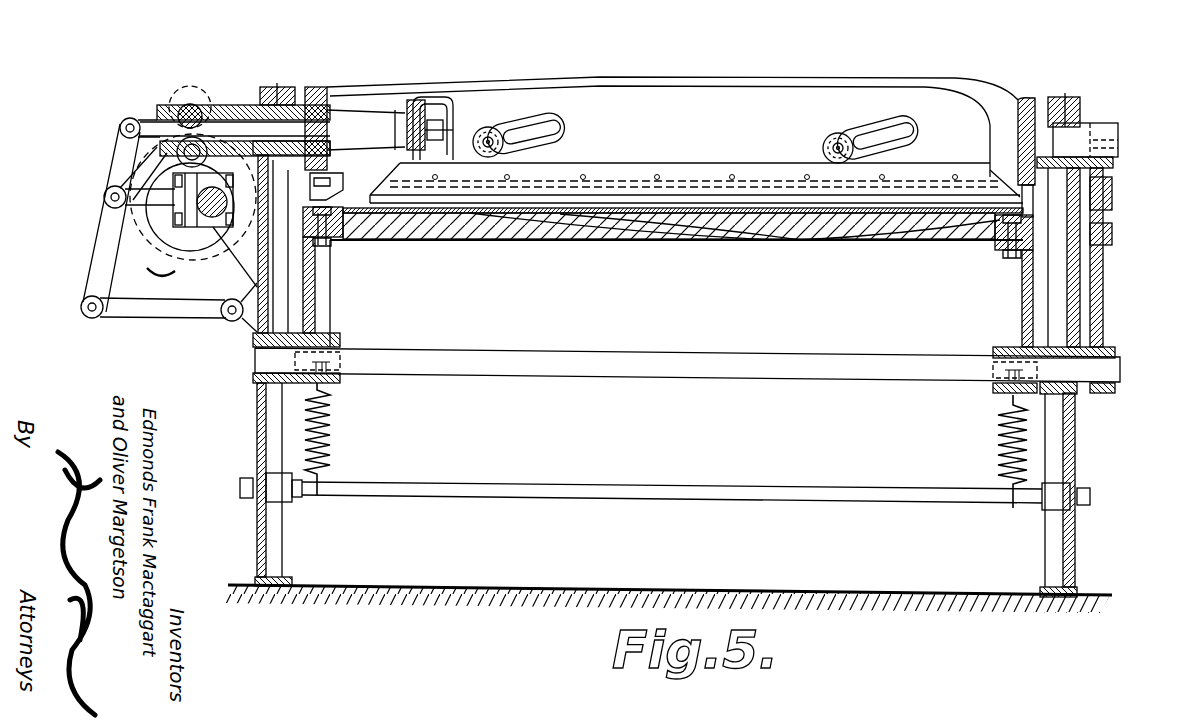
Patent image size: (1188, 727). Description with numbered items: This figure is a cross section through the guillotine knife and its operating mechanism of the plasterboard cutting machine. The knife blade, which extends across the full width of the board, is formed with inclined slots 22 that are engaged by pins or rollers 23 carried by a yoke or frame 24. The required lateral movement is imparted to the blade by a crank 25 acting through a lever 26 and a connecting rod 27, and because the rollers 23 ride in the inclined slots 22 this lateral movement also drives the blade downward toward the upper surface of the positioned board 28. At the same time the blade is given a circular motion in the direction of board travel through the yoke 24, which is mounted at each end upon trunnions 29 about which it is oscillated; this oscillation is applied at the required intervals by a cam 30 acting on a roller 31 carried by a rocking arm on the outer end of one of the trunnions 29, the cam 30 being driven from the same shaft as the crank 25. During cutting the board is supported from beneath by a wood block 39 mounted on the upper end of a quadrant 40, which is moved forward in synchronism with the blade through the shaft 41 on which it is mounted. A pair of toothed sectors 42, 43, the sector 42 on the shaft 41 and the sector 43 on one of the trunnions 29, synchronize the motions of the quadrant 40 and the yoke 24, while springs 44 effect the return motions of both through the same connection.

The inclined slots 22 is at (550, 137).
The pins or rollers 23 is at (492, 128).
The yoke or frame 24 is at (995, 102).
The crank 25 is at (213, 222).
The lever 26 is at (97, 257).
The connecting rod 27 is at (150, 205).
The positioned board 28 is at (697, 213).
The trunnions 29 is at (290, 102).
The cam 30 is at (147, 181).
The roller 31 is at (145, 147).
The block 39 is at (683, 240).
The quadrant 40 is at (310, 293).
The shaft 41 is at (717, 368).
The toothed sector 42 is at (1107, 237).
The toothed sector 43 is at (1113, 190).
The springs 44 is at (330, 408).